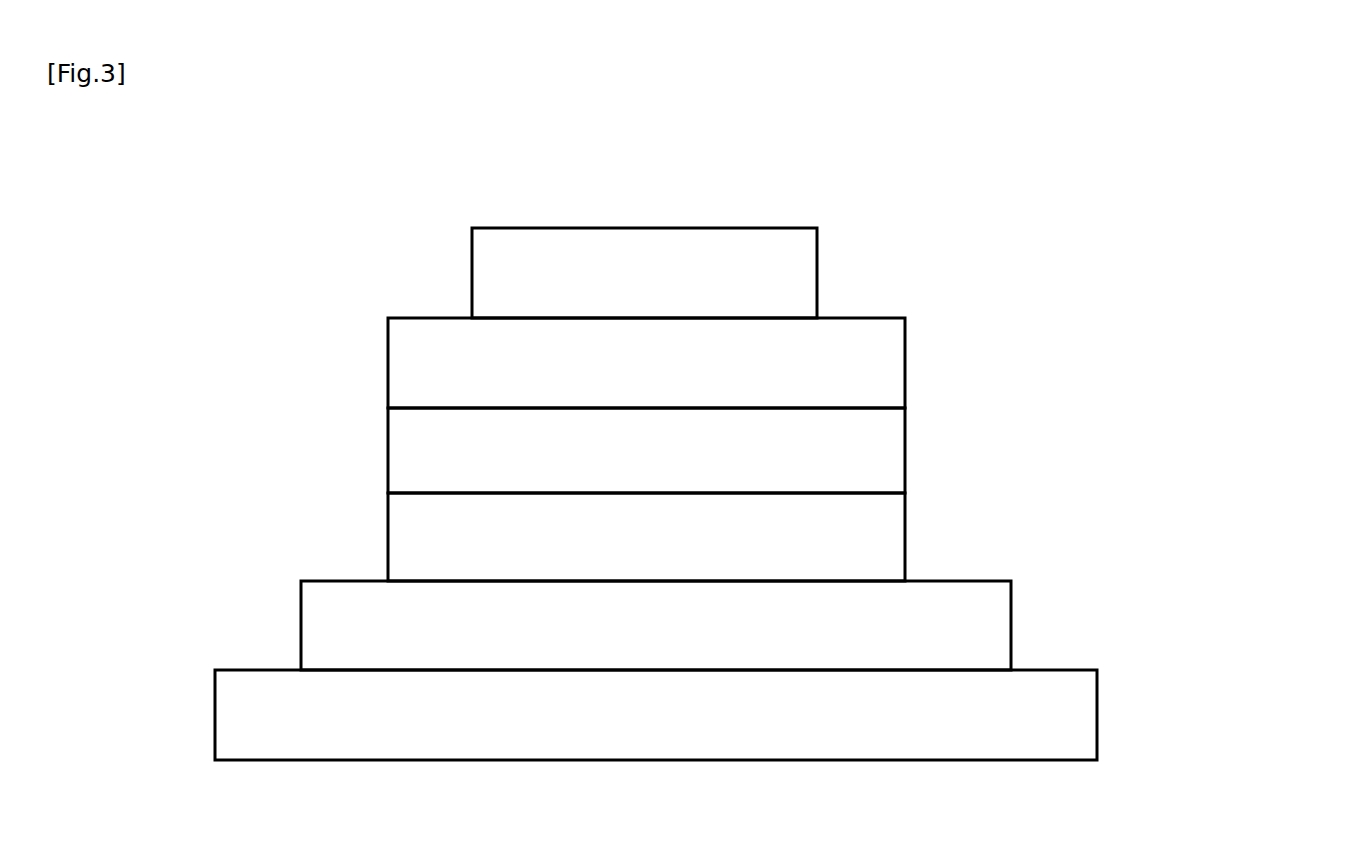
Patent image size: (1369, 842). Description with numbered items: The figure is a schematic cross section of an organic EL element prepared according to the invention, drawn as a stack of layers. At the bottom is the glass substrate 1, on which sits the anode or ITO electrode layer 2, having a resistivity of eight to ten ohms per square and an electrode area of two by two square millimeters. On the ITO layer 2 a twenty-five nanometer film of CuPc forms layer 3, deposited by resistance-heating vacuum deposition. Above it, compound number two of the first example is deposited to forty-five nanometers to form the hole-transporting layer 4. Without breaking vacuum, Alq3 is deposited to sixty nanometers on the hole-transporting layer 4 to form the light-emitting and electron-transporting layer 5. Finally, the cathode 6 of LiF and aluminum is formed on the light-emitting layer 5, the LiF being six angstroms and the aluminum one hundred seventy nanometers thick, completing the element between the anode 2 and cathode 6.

The glass substrate 1 is at (1150, 722).
The anode (ITO layer) 2 is at (1061, 628).
The CuPc layer 3 is at (968, 538).
The hole-transporting layer 4 is at (958, 452).
The light-emitting and electron-transporting layer 5 is at (958, 370).
The cathode (LiF/Al) 6 is at (875, 269).